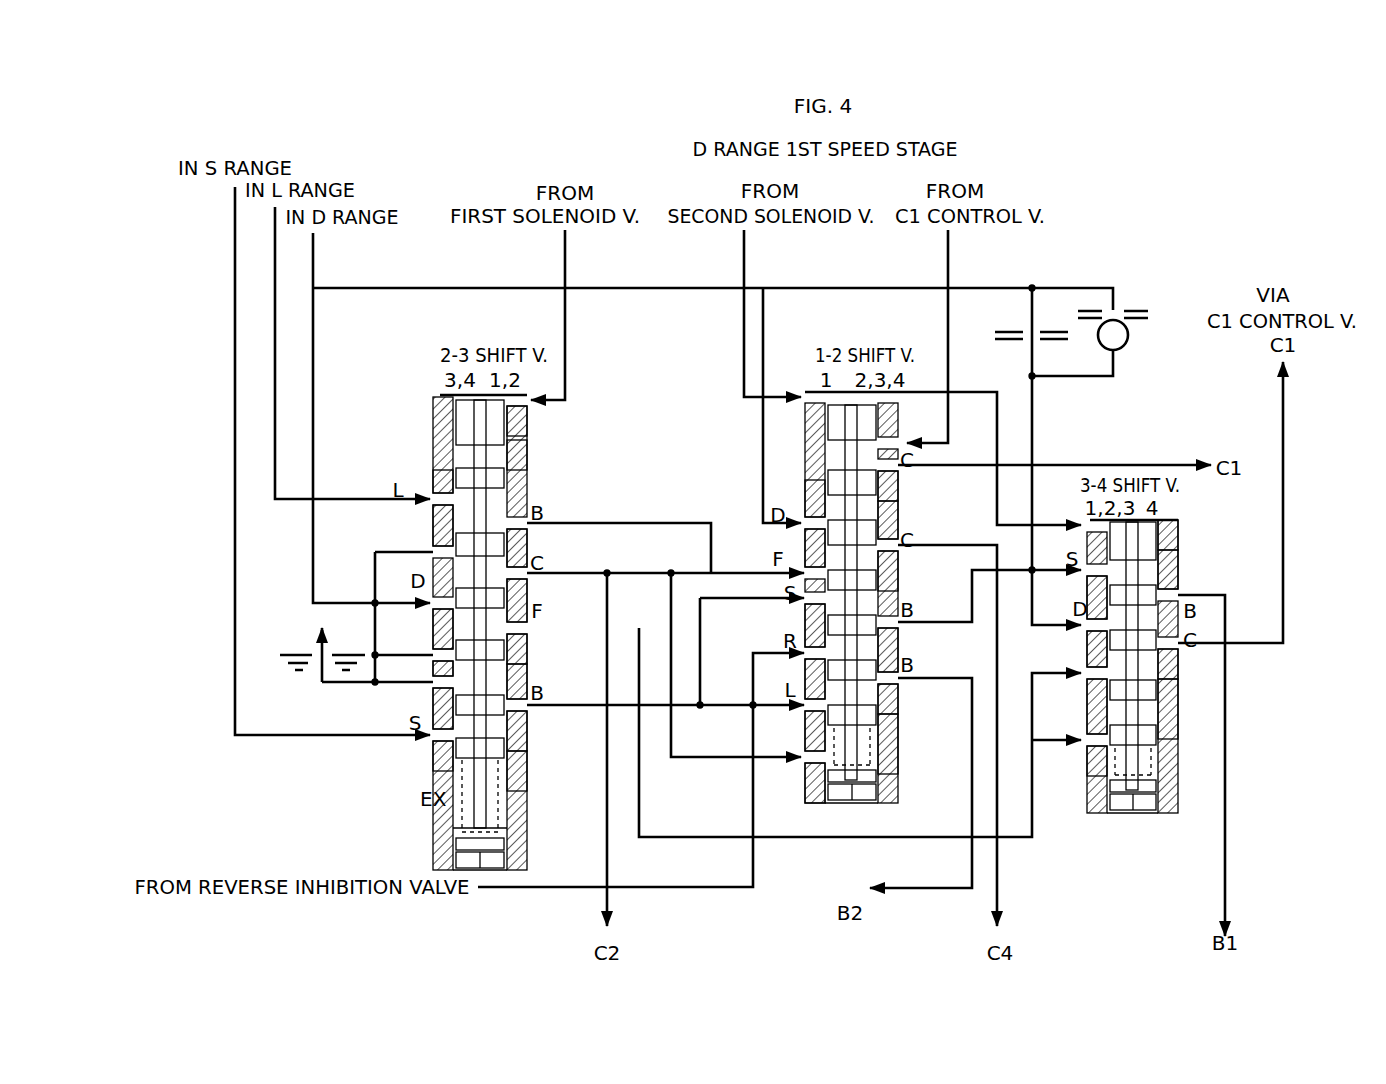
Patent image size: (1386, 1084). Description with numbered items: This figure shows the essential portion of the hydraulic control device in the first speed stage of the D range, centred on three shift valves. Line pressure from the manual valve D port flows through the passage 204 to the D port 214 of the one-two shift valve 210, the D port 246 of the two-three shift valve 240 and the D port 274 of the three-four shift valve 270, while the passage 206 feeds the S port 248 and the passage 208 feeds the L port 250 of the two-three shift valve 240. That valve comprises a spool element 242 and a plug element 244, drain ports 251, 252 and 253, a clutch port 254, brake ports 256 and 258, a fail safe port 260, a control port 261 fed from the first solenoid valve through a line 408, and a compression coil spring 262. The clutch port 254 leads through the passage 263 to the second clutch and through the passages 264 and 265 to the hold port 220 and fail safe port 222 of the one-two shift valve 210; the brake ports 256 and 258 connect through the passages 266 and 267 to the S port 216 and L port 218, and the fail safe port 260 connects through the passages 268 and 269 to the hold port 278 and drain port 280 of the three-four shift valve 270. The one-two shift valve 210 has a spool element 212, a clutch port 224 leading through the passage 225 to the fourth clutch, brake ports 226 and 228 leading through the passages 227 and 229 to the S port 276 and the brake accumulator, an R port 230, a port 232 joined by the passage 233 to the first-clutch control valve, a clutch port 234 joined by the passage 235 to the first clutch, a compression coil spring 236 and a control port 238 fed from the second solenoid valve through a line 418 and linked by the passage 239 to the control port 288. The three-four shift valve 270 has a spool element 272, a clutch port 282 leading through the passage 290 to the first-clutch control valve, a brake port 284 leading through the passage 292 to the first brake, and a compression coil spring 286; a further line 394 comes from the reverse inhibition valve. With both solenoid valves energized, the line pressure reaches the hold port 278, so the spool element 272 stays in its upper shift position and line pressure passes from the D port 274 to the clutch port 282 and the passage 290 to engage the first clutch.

The passage 204 is at (315, 275).
The passage 206 is at (238, 347).
The passage 208 is at (275, 343).
The 1-2 shift valve 210 is at (904, 763).
The spool element 212 is at (898, 508).
The D port 214 is at (807, 504).
The S port 216 is at (808, 612).
The L port 218 is at (810, 717).
The hold port 220 is at (810, 764).
The fail safe port 222 is at (803, 550).
The clutch port 224 is at (898, 558).
The passage 225 is at (997, 898).
The brake port 226 is at (898, 630).
The passage 227 is at (958, 620).
The brake port 228 is at (898, 685).
The passage 229 is at (900, 900).
The R port 230 is at (807, 657).
The port 232 is at (900, 440).
The passage 233 is at (948, 250).
The clutch port 234 is at (900, 478).
The passage 235 is at (1123, 457).
The compression coil spring 236 is at (900, 748).
The control port 238 is at (815, 392).
The passage 239 is at (1032, 418).
The 2-3 shift valve 240 is at (430, 842).
The spool element 242 is at (528, 670).
The plug element 244 is at (524, 456).
The D port 246 is at (436, 608).
The S port 248 is at (434, 748).
The L port 250 is at (437, 486).
The drain port 251 is at (436, 684).
The drain port 252 is at (436, 550).
The drain port 253 is at (436, 662).
The clutch port 254 is at (530, 588).
The brake port 256 is at (532, 716).
The brake port 258 is at (530, 538).
The fail safe port 260 is at (528, 640).
The control port 261 is at (525, 418).
The compression coil spring 262 is at (528, 778).
The passage 263 is at (607, 865).
The passage 264 is at (706, 762).
The passage 265 is at (764, 573).
The passage 266 is at (690, 710).
The passage 267 is at (680, 520).
The passage 268 is at (875, 842).
The passage 269 is at (1037, 676).
The 3-4 shift valve 270 is at (1182, 816).
The spool element 272 is at (1180, 538).
The D port 274 is at (1088, 634).
The S port 276 is at (1088, 582).
The hold port 278 is at (1088, 753).
The drain port 280 is at (1088, 692).
The clutch port 282 is at (1178, 662).
The brake port 284 is at (1179, 578).
The compression coil spring 286 is at (1171, 732).
The control port 288 is at (1082, 528).
The passage 290 is at (1283, 478).
The passage 292 is at (1225, 822).
The oil passage from reverse inhibition valve 394 is at (695, 892).
The oil passage from first solenoid valve 408 is at (565, 262).
The oil passage from second solenoid valve 418 is at (744, 262).